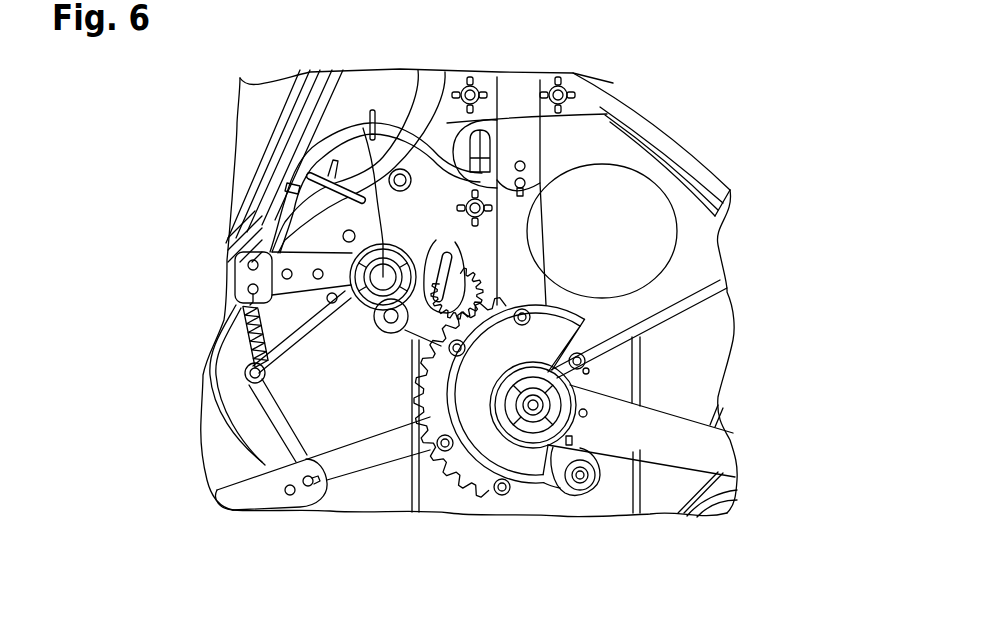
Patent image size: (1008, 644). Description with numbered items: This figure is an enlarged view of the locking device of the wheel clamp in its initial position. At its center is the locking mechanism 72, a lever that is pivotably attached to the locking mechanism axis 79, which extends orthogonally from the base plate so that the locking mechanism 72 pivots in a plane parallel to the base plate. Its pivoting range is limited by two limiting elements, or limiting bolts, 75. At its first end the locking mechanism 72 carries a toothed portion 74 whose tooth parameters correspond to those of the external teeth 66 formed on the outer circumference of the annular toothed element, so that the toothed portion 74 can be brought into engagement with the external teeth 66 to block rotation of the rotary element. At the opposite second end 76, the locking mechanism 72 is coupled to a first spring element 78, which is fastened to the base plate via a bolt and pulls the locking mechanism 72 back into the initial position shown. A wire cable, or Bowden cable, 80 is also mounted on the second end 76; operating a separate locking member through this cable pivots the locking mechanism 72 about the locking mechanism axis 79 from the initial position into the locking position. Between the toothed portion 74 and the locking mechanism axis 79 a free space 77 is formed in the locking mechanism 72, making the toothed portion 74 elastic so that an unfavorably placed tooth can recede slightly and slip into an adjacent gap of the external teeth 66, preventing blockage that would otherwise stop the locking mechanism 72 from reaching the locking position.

The external teeth 66 is at (457, 512).
The locking mechanism 72 is at (366, 345).
The toothed portion 74 is at (497, 280).
The limiting elements (limiting bolts) 75 is at (310, 180).
The second end 76 is at (226, 284).
The free space 77 is at (447, 240).
The first spring element 78 is at (236, 347).
The locking mechanism axis 79 is at (355, 124).
The wire cable (Bowden cable) 80 is at (265, 217).